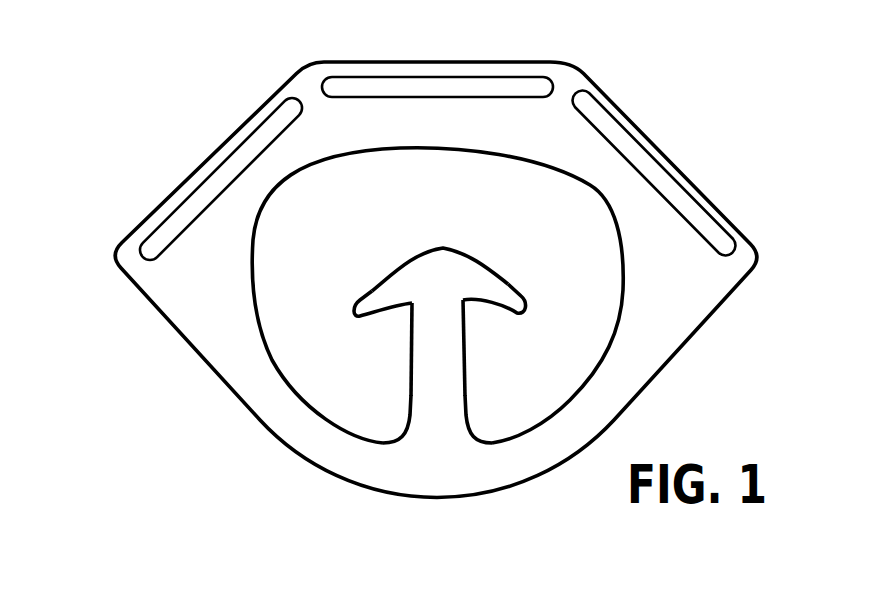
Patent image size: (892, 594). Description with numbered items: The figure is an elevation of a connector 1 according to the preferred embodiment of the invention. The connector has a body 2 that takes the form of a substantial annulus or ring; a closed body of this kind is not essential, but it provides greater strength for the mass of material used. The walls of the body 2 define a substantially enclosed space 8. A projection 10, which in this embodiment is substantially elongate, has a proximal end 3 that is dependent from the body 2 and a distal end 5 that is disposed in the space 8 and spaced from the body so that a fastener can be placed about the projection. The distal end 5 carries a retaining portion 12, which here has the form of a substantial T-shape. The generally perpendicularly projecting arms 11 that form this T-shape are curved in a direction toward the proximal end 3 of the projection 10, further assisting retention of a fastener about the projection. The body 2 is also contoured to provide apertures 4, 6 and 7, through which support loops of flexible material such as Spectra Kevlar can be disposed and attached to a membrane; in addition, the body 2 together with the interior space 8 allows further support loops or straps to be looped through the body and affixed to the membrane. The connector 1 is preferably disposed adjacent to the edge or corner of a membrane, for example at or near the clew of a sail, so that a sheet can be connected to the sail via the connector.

The connector 1 is at (437, 265).
The body 2 is at (187, 302).
The proximal end 3 is at (433, 433).
The aperture 4 is at (227, 173).
The distal end 5 is at (395, 352).
The aperture 6 is at (682, 207).
The aperture 7 is at (477, 90).
The enclosed space 8 is at (378, 197).
The projection 10 is at (437, 367).
The arms 11 is at (380, 298).
The retaining portion 12 is at (433, 273).